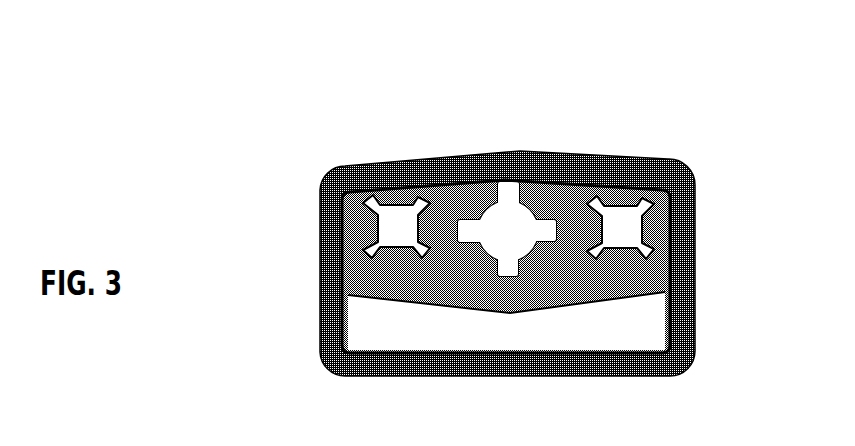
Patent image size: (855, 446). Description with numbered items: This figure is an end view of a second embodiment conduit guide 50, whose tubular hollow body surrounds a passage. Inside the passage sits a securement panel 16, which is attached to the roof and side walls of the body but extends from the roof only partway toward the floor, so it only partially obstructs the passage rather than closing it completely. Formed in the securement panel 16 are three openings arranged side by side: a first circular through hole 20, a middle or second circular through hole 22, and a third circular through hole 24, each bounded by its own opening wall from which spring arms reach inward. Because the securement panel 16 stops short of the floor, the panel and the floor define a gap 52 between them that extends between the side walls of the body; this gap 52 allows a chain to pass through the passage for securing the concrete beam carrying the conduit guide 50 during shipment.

The securement panel 16 is at (457, 296).
The first circular through hole 20 is at (613, 215).
The second circular through hole 22 is at (505, 218).
The third circular through hole 24 is at (392, 220).
The conduit guide 50 is at (718, 160).
The gap 52 is at (640, 322).